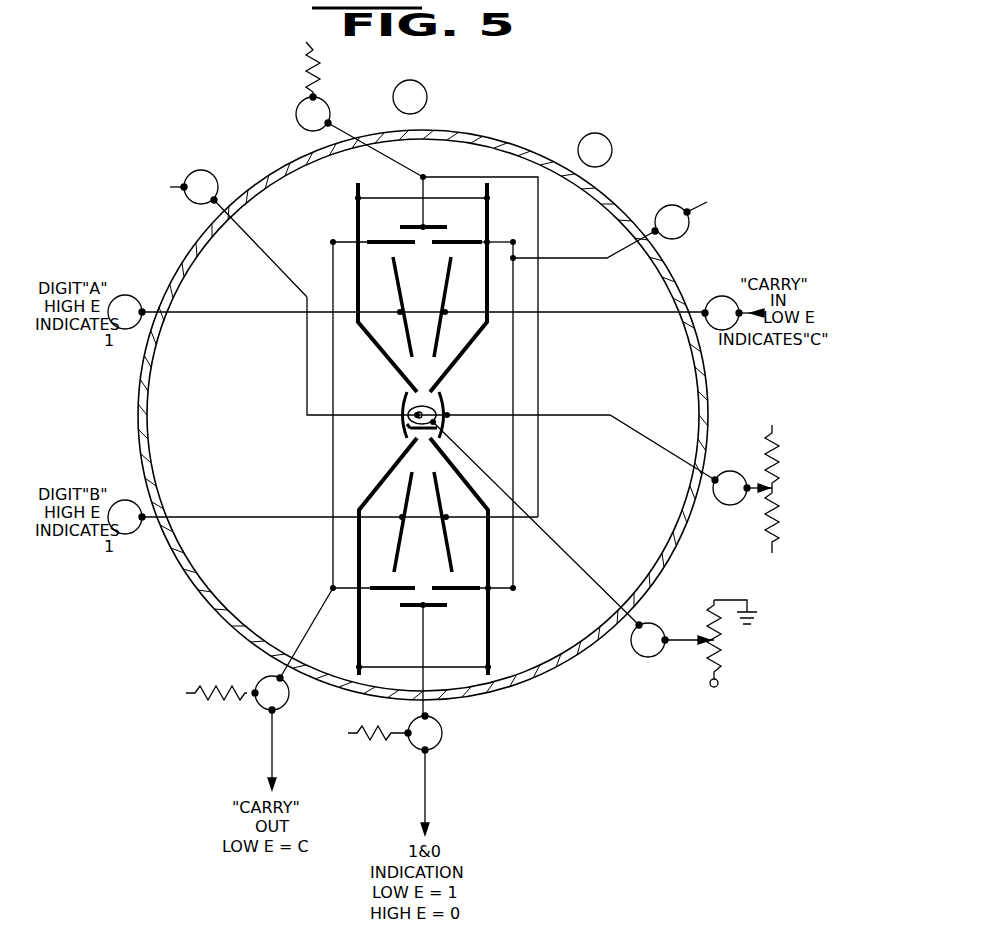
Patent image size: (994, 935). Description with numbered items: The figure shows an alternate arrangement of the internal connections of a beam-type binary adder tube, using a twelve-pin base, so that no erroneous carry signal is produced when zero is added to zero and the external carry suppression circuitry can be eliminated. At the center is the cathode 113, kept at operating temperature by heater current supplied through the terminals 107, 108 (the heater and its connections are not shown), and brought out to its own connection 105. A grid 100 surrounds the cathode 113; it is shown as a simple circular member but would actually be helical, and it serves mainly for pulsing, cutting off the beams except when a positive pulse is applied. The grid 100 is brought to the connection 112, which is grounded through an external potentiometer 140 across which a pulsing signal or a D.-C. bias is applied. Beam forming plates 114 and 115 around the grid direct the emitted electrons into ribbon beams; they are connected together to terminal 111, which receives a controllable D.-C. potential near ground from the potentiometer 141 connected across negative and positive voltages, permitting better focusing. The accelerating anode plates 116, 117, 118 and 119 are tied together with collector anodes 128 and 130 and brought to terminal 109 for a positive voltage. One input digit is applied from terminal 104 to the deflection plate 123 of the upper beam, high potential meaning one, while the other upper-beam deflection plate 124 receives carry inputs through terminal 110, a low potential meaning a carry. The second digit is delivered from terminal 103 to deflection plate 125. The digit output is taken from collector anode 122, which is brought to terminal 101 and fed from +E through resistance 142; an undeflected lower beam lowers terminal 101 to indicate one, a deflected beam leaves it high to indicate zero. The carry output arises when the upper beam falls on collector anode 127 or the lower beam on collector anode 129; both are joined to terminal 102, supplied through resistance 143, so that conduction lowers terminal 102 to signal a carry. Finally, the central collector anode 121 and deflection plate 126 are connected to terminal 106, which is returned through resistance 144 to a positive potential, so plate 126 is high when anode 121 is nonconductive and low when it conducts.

The grid electrode 100 is at (408, 429).
The terminal 101 is at (423, 774).
The terminal 102 is at (270, 732).
The terminal 103 is at (323, 517).
The terminal 104 is at (406, 312).
The connection 105 is at (194, 187).
The terminal 106 is at (313, 112).
The terminal 107 is at (423, 97).
The terminal 108 is at (608, 150).
The terminal 109 is at (692, 215).
The terminal 110 is at (733, 313).
The terminal 111 is at (742, 488).
The connection 112 is at (672, 639).
The cathode 113 is at (414, 408).
The beam forming plate 114 is at (400, 412).
The beam forming plate 115 is at (446, 406).
The accelerating anode plate 116 is at (358, 226).
The accelerating anode plate 117 is at (487, 211).
The accelerating anode plate 118 is at (360, 646).
The accelerating anode plate 119 is at (484, 646).
The central collector anode 121 is at (426, 224).
The collector anode 122 is at (428, 612).
The deflection plate 123 is at (396, 287).
The deflection plate 124 is at (465, 285).
The deflection plate 125 is at (394, 554).
The deflection plate 126 is at (467, 551).
The collector anode 127 is at (402, 240).
The collector anode 128 is at (444, 240).
The collector anode 129 is at (402, 590).
The collector anode 130 is at (445, 590).
The potentiometer 140 is at (735, 658).
The potentiometer 141 is at (777, 524).
The resistance 142 is at (382, 728).
The resistance 143 is at (221, 686).
The resistance 144 is at (314, 76).